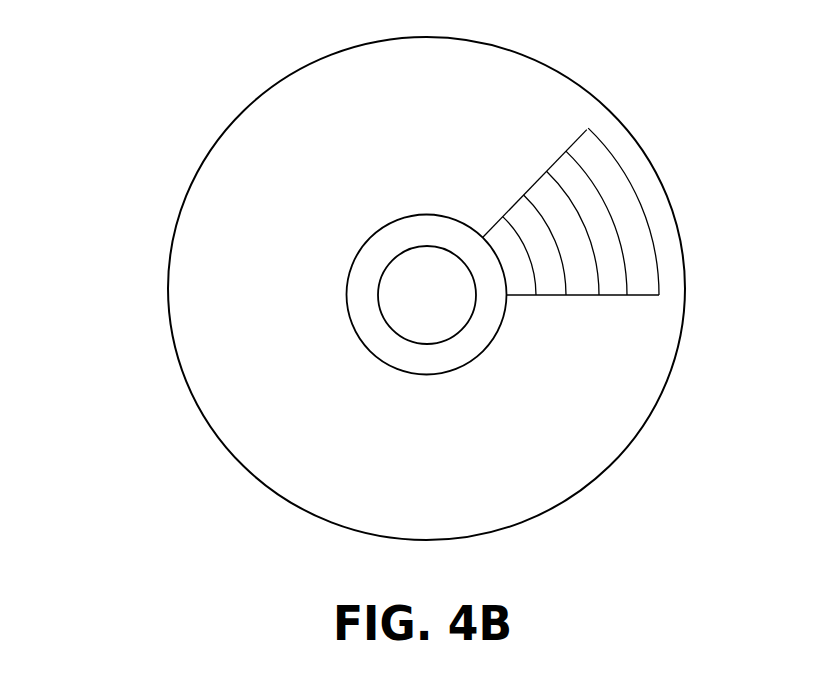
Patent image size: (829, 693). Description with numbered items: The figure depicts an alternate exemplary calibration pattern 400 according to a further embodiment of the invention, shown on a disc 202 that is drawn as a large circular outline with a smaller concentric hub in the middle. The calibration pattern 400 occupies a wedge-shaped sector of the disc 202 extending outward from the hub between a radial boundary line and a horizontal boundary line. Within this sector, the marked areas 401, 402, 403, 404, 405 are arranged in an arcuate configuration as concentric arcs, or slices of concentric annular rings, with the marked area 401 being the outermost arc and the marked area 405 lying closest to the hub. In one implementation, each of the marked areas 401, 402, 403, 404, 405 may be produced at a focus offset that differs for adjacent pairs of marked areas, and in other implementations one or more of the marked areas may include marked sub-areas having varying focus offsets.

The optical disc 202 is at (108, 115).
The calibration pattern 400 is at (588, 226).
The marked area 401 is at (582, 152).
The marked area 402 is at (575, 185).
The marked area 403 is at (563, 218).
The marked area 404 is at (547, 265).
The marked area 405 is at (513, 265).